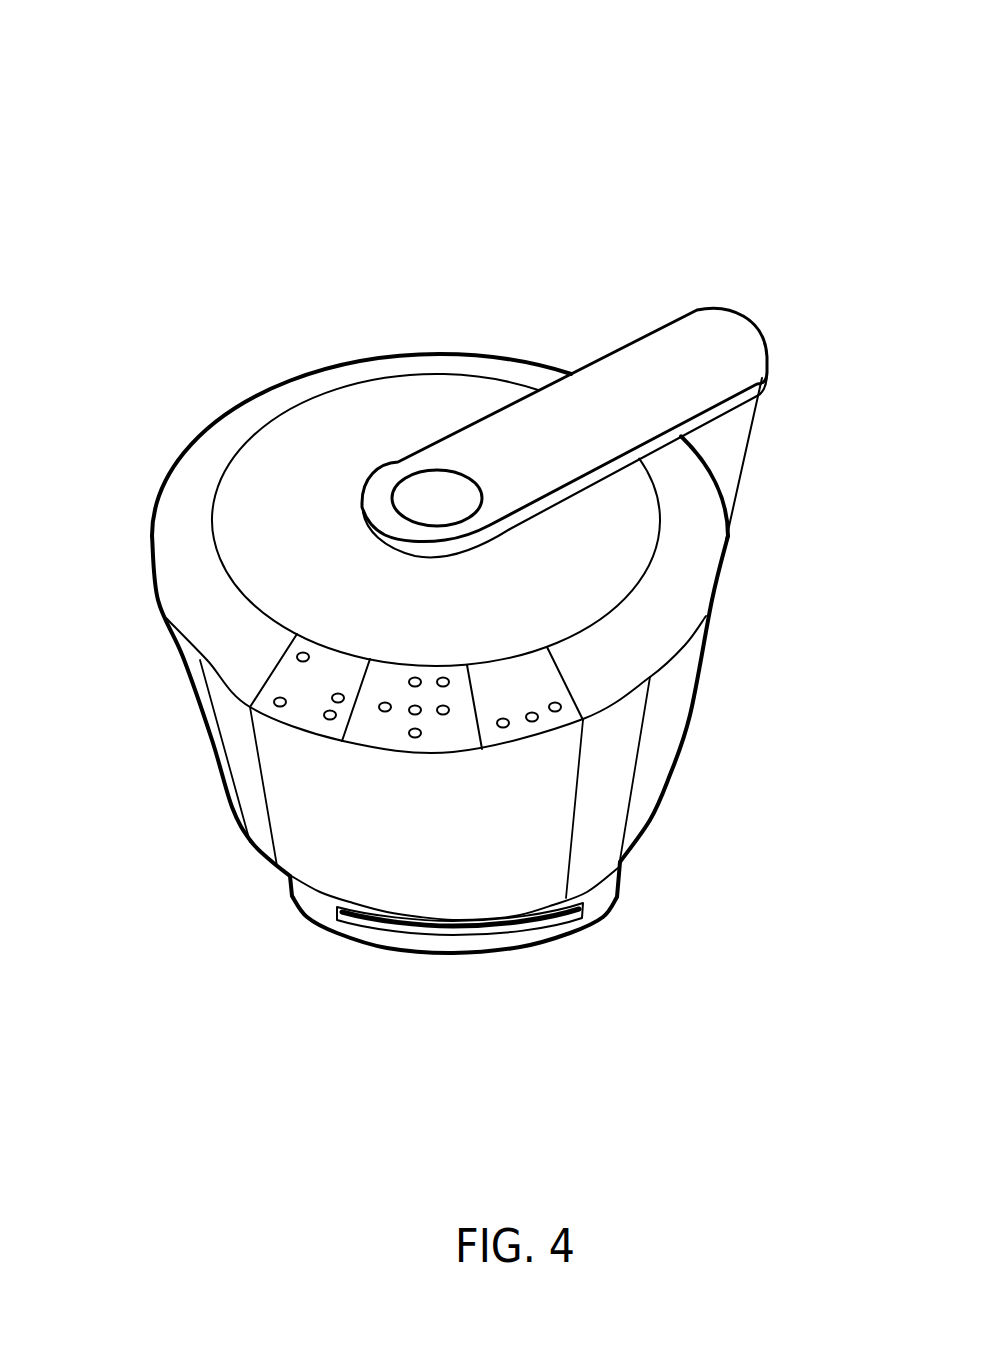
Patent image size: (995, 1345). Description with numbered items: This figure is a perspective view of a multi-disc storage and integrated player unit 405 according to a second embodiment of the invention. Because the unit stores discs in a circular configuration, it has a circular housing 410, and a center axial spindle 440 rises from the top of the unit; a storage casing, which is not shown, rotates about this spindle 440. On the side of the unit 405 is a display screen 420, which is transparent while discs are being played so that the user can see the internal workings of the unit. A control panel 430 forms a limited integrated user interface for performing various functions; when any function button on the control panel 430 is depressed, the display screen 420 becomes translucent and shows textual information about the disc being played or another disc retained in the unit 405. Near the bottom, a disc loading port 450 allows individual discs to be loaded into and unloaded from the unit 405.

The multi-disc storage and integrated player unit 405 is at (449, 536).
The circular housing 410 is at (480, 373).
The display screen 420 is at (515, 833).
The control panel 430 is at (285, 679).
The center axial spindle 440 is at (435, 497).
The disc loading port 450 is at (532, 927).